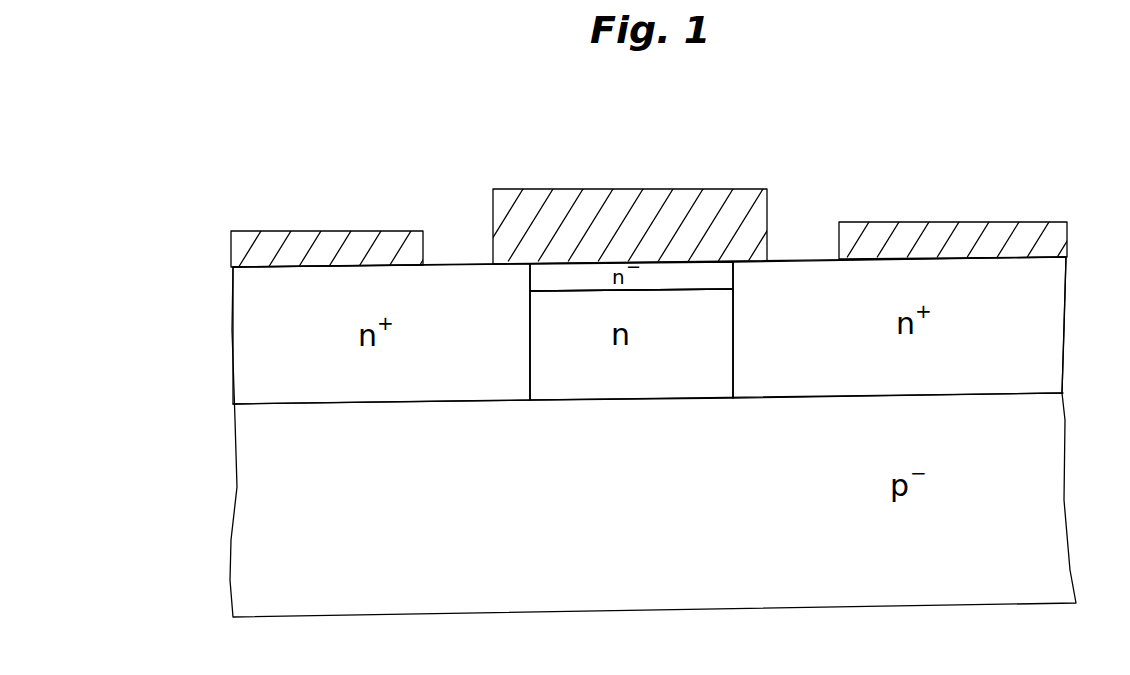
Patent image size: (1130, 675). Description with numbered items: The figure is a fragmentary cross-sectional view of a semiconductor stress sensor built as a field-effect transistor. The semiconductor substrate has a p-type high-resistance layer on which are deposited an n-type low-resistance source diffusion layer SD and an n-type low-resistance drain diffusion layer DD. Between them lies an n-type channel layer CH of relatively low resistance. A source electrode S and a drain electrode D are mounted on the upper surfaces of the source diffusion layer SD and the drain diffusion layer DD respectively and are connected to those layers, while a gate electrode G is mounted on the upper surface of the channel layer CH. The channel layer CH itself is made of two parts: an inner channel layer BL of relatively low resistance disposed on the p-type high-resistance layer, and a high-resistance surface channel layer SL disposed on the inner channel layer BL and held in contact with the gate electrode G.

The drain electrode D is at (343, 245).
The gate electrode G is at (715, 202).
The source electrode S is at (985, 235).
The surface channel layer SL is at (577, 275).
The drain diffusion layer DD is at (272, 332).
The source diffusion layer SD is at (1040, 333).
The inner channel layer BL is at (573, 370).
The channel layer CH is at (608, 372).